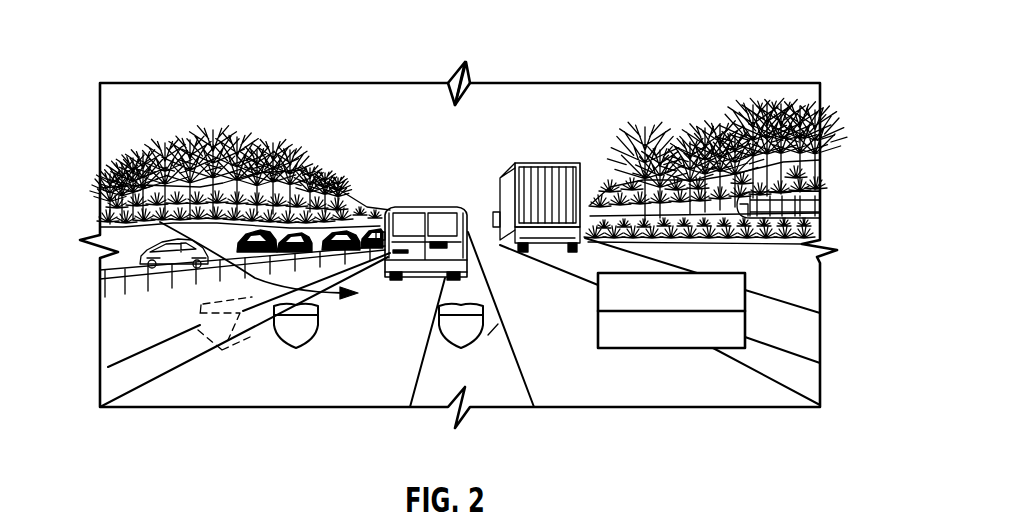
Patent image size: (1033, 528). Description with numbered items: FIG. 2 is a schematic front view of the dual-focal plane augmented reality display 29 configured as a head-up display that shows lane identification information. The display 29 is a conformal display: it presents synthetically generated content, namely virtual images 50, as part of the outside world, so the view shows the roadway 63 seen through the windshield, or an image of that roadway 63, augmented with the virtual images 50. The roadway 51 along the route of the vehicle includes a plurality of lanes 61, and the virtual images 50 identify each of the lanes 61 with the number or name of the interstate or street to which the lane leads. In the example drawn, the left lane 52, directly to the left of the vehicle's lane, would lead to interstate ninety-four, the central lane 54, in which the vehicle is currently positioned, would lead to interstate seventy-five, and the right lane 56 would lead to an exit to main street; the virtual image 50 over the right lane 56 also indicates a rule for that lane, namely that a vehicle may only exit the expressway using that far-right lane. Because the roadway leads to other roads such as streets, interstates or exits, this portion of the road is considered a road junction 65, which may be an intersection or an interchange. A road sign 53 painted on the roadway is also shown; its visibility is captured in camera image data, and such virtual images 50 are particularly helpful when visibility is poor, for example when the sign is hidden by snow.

The display 29 is at (643, 80).
The virtual image 50 is at (320, 330).
The roadway 51 is at (118, 200).
The left lane 52 is at (123, 383).
The road sign 53 is at (197, 312).
The central lane 54 is at (493, 332).
The right lane 56 is at (800, 382).
The lanes 61 is at (117, 330).
The roadway 63 is at (515, 393).
The road junction 65 is at (456, 150).